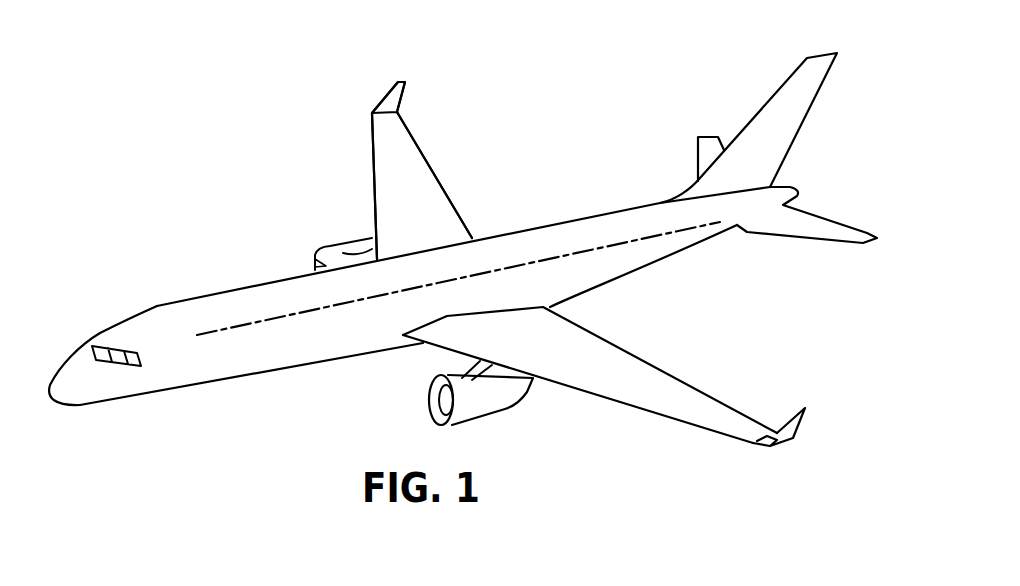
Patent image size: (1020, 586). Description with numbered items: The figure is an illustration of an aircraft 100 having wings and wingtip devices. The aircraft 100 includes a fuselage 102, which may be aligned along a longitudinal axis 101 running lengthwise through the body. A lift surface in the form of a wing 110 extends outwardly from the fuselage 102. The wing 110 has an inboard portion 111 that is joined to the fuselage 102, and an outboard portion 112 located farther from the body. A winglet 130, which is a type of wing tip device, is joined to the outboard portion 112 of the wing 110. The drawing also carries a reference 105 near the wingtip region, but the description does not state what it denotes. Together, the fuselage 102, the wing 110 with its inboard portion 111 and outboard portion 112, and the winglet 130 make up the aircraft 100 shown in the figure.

The aircraft 100 is at (210, 110).
The longitudinal axis 101 is at (227, 328).
The fuselage 102 is at (157, 305).
The wing tip 105 is at (411, 93).
The wing 110 is at (445, 192).
The inboard portion 111 is at (477, 217).
The outboard portion 112 is at (338, 137).
The winglet 130 is at (390, 90).